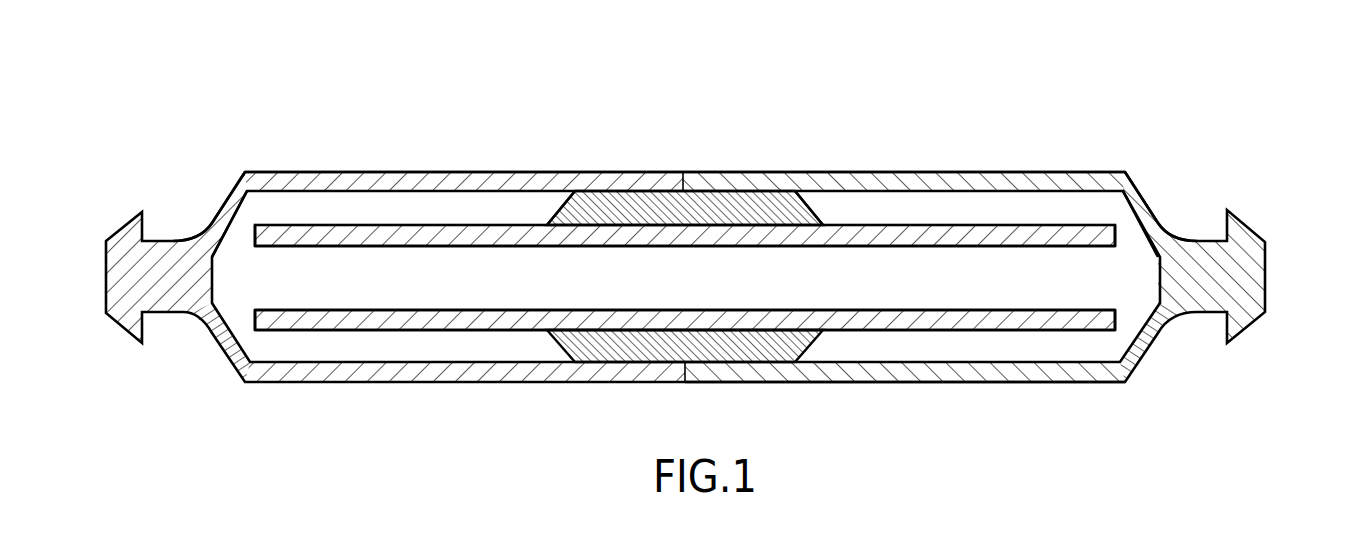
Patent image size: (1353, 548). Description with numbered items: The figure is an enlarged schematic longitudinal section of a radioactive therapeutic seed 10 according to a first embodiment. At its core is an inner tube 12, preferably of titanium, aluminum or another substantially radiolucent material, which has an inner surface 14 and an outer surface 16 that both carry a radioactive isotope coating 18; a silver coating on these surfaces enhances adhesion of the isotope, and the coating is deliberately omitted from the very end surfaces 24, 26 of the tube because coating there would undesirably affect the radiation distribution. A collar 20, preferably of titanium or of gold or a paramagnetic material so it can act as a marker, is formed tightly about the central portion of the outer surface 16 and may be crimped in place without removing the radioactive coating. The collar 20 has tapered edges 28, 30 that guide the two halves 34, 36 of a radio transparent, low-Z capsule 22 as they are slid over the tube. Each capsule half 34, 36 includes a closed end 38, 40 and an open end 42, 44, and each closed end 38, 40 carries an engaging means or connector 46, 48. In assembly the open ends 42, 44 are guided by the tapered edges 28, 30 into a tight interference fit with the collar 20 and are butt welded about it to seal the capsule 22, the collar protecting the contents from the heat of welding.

The radioactive therapeutic seed 10 is at (812, 87).
The inner tube 12 is at (512, 229).
The inner surface 14 is at (404, 300).
The outer surface 16 is at (337, 332).
The radioactive isotope coating 18 is at (447, 310).
The collar 20 is at (632, 203).
The capsule 22 is at (462, 181).
The end surface 24 is at (252, 232).
The end surface 26 is at (1117, 230).
The tapered edge 28 is at (557, 213).
The tapered edge 30 is at (808, 203).
The capsule half 34 is at (331, 178).
The capsule half 36 is at (998, 174).
The closed end 38 is at (213, 221).
The closed end 40 is at (1150, 212).
The open end 42 is at (645, 383).
The open end 44 is at (716, 383).
The engaging means or connector 46 is at (128, 262).
The engaging means or connector 48 is at (1245, 250).